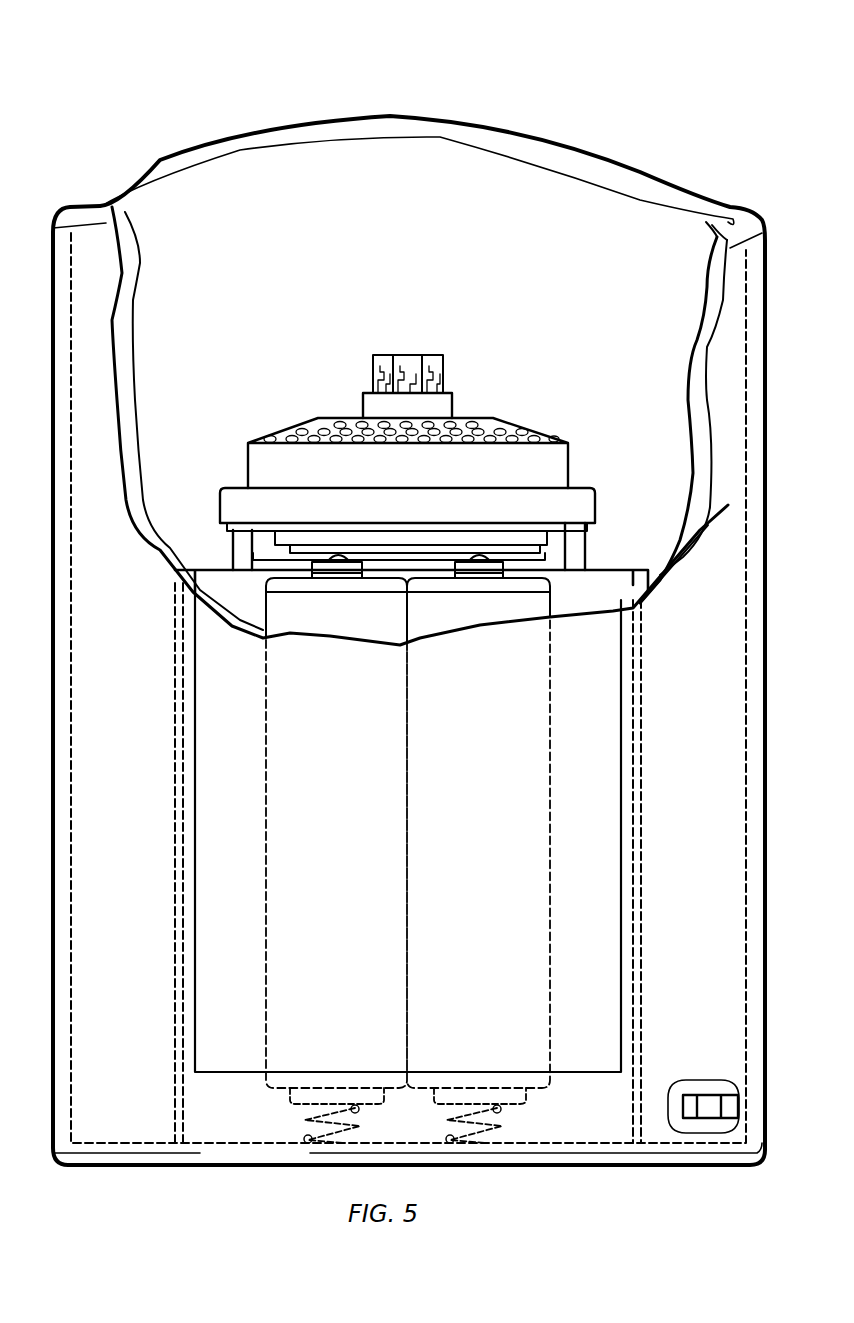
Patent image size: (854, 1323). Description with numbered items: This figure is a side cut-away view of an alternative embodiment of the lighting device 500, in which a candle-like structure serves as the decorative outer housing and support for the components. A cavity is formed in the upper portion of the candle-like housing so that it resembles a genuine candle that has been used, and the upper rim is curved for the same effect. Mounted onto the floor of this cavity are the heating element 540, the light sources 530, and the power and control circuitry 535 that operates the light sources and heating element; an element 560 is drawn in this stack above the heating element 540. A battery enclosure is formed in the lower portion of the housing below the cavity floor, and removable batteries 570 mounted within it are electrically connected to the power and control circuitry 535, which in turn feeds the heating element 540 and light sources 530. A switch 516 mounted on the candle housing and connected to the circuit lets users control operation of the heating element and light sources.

The lighting device 500 is at (212, 64).
The switch 516 is at (712, 1095).
The light sources 530 is at (407, 355).
The power and control circuitry 535 is at (233, 548).
The heating element 540 is at (598, 510).
The perforated housing 560 is at (570, 468).
The removable batteries 570 is at (555, 603).